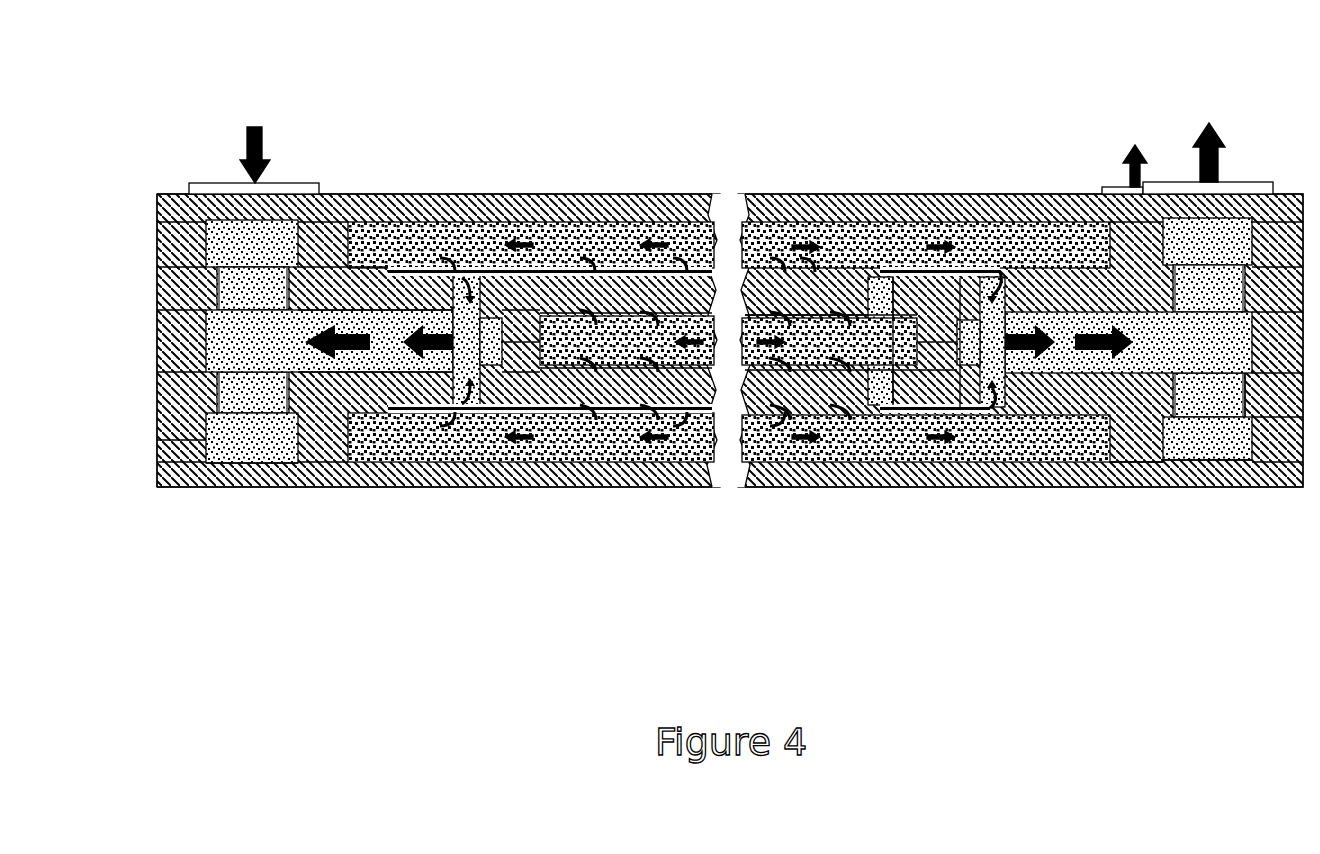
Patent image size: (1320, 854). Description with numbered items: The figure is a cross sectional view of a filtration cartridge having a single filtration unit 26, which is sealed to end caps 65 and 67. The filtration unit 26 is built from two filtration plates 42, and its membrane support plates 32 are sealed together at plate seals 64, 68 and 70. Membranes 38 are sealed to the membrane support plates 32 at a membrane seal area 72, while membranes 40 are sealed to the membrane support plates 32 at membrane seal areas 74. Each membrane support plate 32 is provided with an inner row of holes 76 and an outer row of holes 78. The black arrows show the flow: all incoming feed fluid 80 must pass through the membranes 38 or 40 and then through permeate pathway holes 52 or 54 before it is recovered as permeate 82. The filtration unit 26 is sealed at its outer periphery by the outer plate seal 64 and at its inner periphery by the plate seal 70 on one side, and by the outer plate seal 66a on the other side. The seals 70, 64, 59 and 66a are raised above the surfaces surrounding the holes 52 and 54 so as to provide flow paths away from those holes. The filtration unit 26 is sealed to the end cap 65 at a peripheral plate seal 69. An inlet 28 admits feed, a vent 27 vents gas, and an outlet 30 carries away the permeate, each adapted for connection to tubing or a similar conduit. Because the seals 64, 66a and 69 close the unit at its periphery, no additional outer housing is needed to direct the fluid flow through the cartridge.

The filtration unit 26 is at (215, 388).
The vent 27 is at (1128, 190).
The inlet 28 is at (236, 183).
The outlet 30 is at (1227, 182).
The membrane support plate 32 is at (515, 300).
The membrane 38 is at (650, 255).
The membrane 40 is at (700, 335).
The filtration plate 42 is at (290, 263).
The permeate pathway hole 52 is at (1245, 455).
The permeate pathway hole 54 is at (268, 277).
The seal 59 is at (327, 243).
The outer plate seal 64 is at (157, 345).
The end cap 65 is at (1105, 192).
The outer plate seal 66a is at (157, 243).
The end cap 67 is at (1130, 465).
The plate seal 68 is at (300, 330).
The peripheral plate seal 69 is at (242, 463).
The plate seal 70 is at (492, 335).
The membrane seal area 72 is at (405, 290).
The membrane seal area 74 is at (478, 290).
The inner row of holes 76 is at (585, 285).
The outer row of holes 78 is at (490, 270).
The incoming feed fluid 80 is at (385, 258).
The permeate 82 is at (365, 240).